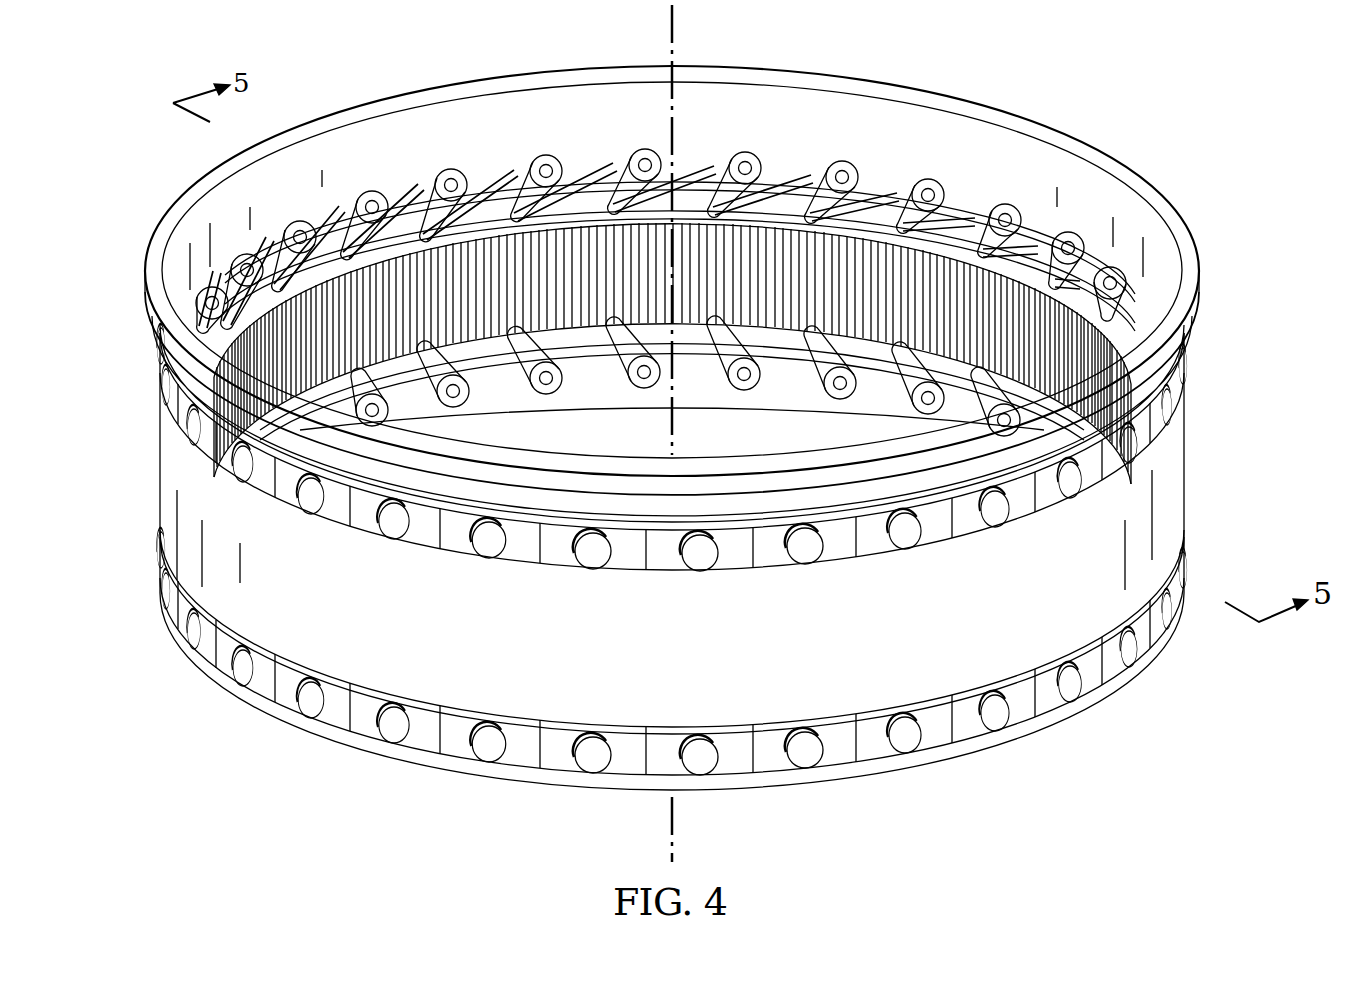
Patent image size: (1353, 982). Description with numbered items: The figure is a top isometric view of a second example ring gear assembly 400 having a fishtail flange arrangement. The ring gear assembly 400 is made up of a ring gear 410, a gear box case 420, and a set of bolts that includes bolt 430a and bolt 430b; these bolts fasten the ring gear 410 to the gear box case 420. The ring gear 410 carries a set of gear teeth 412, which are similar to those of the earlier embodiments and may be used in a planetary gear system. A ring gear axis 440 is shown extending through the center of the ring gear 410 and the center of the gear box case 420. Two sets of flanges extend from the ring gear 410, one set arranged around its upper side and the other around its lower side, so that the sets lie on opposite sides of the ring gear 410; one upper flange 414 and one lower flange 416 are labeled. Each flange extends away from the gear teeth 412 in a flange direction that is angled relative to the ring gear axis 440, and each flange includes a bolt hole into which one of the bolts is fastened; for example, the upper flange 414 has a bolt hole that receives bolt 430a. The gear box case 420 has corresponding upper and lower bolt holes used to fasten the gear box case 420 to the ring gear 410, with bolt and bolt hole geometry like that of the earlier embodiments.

The ring gear assembly 400 is at (333, 68).
The ring gear 410 is at (872, 190).
The gear teeth 412 is at (787, 252).
The upper flange 414 is at (522, 180).
The lower flange 416 is at (423, 380).
The gear box case 420 is at (1107, 163).
The bolt 430a is at (546, 158).
The bolt 430b is at (1002, 514).
The ring gear axis 440 is at (668, 36).